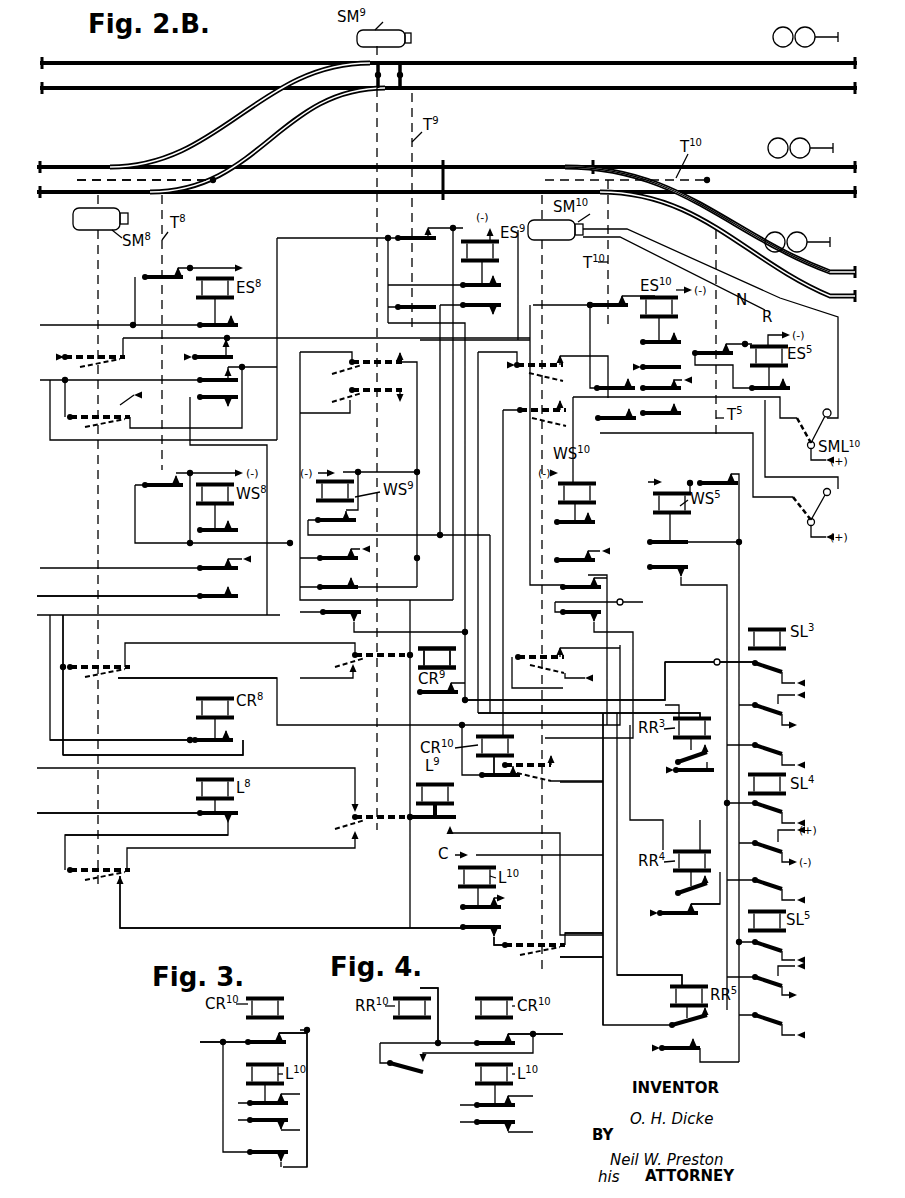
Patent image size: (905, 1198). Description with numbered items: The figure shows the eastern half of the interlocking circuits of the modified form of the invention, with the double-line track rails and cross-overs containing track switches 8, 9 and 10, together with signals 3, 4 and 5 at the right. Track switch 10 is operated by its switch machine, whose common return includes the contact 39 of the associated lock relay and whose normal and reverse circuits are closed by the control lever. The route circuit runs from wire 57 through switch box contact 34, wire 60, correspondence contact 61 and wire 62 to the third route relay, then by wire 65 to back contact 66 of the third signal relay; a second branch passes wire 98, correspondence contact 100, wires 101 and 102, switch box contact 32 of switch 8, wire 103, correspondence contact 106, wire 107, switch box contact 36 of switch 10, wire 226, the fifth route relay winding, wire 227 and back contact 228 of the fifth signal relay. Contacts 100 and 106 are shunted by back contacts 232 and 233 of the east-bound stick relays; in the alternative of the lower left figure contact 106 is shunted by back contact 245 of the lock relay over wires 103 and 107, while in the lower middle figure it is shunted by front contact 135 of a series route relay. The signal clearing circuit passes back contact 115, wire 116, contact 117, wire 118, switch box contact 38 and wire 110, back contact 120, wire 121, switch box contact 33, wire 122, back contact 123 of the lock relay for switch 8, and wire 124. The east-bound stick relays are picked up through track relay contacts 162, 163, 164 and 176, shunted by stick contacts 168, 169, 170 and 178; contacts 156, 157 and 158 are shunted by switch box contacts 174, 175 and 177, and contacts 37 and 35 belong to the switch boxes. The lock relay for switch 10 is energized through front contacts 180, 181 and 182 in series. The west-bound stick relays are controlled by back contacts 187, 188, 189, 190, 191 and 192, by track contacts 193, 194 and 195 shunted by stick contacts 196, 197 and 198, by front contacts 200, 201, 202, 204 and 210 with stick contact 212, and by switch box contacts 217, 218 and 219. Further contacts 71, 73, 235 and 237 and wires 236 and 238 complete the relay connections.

In FIG. 2B, the signal 3 is at (780, 27).
In FIG. 2B, the signal 4 is at (775, 138).
In FIG. 2B, the signal 5 is at (772, 232).
In FIG. 2B, the track switch 8 is at (77, 182).
In FIG. 2B, the track switch 9 is at (404, 72).
In FIG. 2B, the track switch 10 is at (600, 167).
In FIG. 2B, the switch box contact 32 is at (95, 665).
In FIG. 2B, the switch box contact 33 is at (60, 870).
In FIG. 2B, the switch box contact 34 is at (348, 655).
In FIG. 2B, the switch box contact 35 is at (350, 815).
In FIG. 2B, the switch box contact 36 is at (540, 765).
In FIG. 2B, the switch box contact 37 is at (540, 408).
In FIG. 2B, the switch box contact 38 is at (530, 944).
In FIG. 2B, the contact 39 is at (465, 907).
In FIG. 3, the contact 39 is at (258, 1102).
In FIG. 4, the contact 39 is at (505, 1105).
In FIG. 2B, the wire 57 is at (82, 597).
In FIG. 2B, the wire 60 is at (417, 672).
In FIG. 2B, the correspondence relay contact 61 is at (420, 698).
In FIG. 2B, the wire 62 is at (663, 705).
In FIG. 2B, the wire 65 is at (700, 710).
In FIG. 2B, the back contact 66 is at (784, 713).
In FIG. 2B, the contact 71 is at (781, 757).
In FIG. 2B, the contact 73 is at (688, 757).
In FIG. 2B, the wire 98 is at (112, 748).
In FIG. 2B, the correspondence relay contact 100 is at (228, 740).
In FIG. 2B, the wire 101 is at (243, 748).
In FIG. 2B, the wire 102 is at (65, 670).
In FIG. 2B, the wire 103 is at (138, 678).
In FIG. 3, the wire 103 is at (210, 1042).
In FIG. 4, the wire 103 is at (410, 989).
In FIG. 2B, the correspondence relay contact 106 is at (498, 778).
In FIG. 3, the correspondence relay contact 106 is at (266, 1040).
In FIG. 4, the correspondence relay contact 106 is at (490, 1040).
In FIG. 2B, the wire 107 is at (520, 777).
In FIG. 3, the wire 107 is at (308, 1030).
In FIG. 4, the wire 107 is at (560, 1029).
In FIG. 2B, the wire 110 is at (520, 948).
In FIG. 2B, the back contact 115 is at (779, 882).
In FIG. 2B, the wire 116 is at (683, 908).
In FIG. 2B, the contact 117 is at (690, 890).
In FIG. 2B, the wire 118 is at (600, 933).
In FIG. 2B, the back contact 120 is at (468, 936).
In FIG. 3, the back contact 120 is at (258, 1125).
In FIG. 4, the back contact 120 is at (498, 1126).
In FIG. 2B, the wire 121 is at (135, 928).
In FIG. 2B, the wire 122 is at (110, 835).
In FIG. 2B, the back contact 123 is at (204, 818).
In FIG. 2B, the wire 124 is at (62, 813).
In FIG. 4, the front contact 135 is at (410, 1070).
In FIG. 2B, the front contact 156 is at (206, 372).
In FIG. 2B, the contact 157 is at (214, 352).
In FIG. 2B, the front contact 158 is at (658, 364).
In FIG. 2B, the track relay contact 162 is at (192, 268).
In FIG. 2B, the track relay contact 163 is at (418, 251).
In FIG. 2B, the track relay contact 164 is at (605, 303).
In FIG. 2B, the stick contact 168 is at (231, 317).
In FIG. 2B, the stick contact 169 is at (463, 284).
In FIG. 2B, the stick contact 170 is at (676, 329).
In FIG. 2B, the switch box contact 174 is at (96, 357).
In FIG. 2B, the switch box contact 175 is at (103, 414).
In FIG. 2B, the track relay contact 176 is at (708, 342).
In FIG. 2B, the switch box contact 177 is at (524, 360).
In FIG. 2B, the stick contact 178 is at (784, 380).
In FIG. 2B, the front contact 180 is at (575, 579).
In FIG. 2B, the front contact 181 is at (673, 388).
In FIG. 2B, the front contact 182 is at (606, 387).
In FIG. 2B, the back contact 187 is at (690, 774).
In FIG. 2B, the back contact 188 is at (690, 915).
In FIG. 2B, the back contact 189 is at (690, 1050).
In FIG. 2B, the back contact 190 is at (778, 667).
In FIG. 2B, the back contact 191 is at (779, 816).
In FIG. 2B, the back contact 192 is at (780, 954).
In FIG. 2B, the track relay contact 193 is at (440, 301).
In FIG. 2B, the track relay contact 194 is at (605, 410).
In FIG. 2B, the track relay contact 195 is at (712, 481).
In FIG. 2B, the stick contact 196 is at (395, 517).
In FIG. 2B, the stick contact 197 is at (569, 514).
In FIG. 2B, the stick contact 198 is at (670, 543).
In FIG. 2B, the front contact 200 is at (145, 483).
In FIG. 2B, the front contact 201 is at (329, 579).
In FIG. 2B, the front contact 202 is at (582, 551).
In FIG. 2B, the front contact 204 is at (219, 560).
In FIG. 2B, the front contact 210 is at (341, 549).
In FIG. 2B, the stick contact 212 is at (231, 521).
In FIG. 2B, the switch box contact 217 is at (540, 655).
In FIG. 2B, the switch box contact 218 is at (370, 356).
In FIG. 2B, the switch box contact 219 is at (372, 396).
In FIG. 2B, the wire 226 is at (565, 784).
In FIG. 2B, the wire 227 is at (705, 985).
In FIG. 2B, the back contact 228 is at (780, 981).
In FIG. 2B, the back contact 232 is at (213, 410).
In FIG. 2B, the back contact 233 is at (676, 414).
In FIG. 2B, the contact 235 is at (780, 1028).
In FIG. 2B, the wire 236 is at (707, 1018).
In FIG. 2B, the contact 237 is at (668, 1024).
In FIG. 2B, the wire 238 is at (603, 993).
In FIG. 2B, the front contact 245 is at (670, 572).
In FIG. 3, the front contact 245 is at (258, 1156).